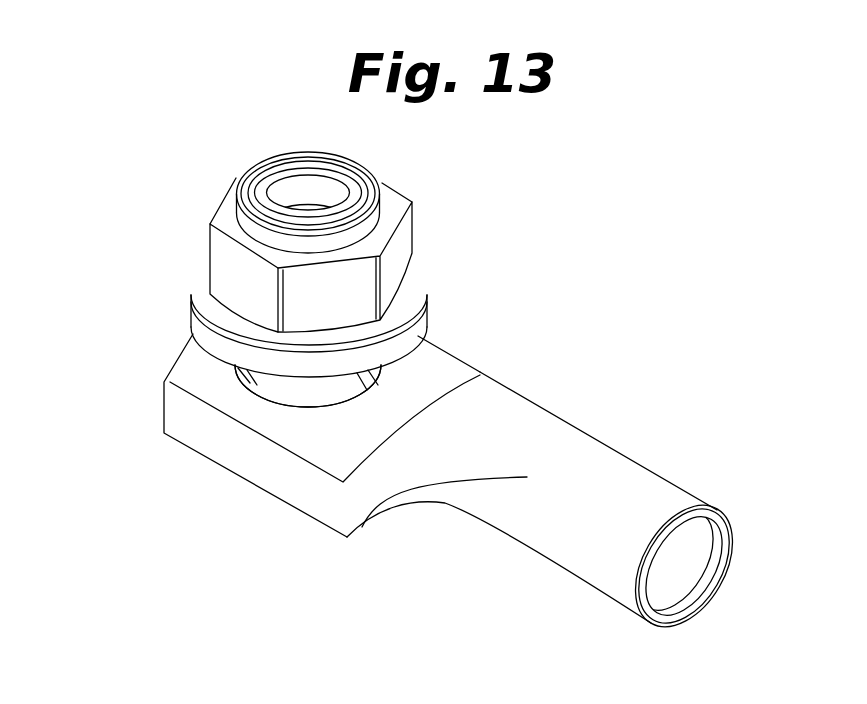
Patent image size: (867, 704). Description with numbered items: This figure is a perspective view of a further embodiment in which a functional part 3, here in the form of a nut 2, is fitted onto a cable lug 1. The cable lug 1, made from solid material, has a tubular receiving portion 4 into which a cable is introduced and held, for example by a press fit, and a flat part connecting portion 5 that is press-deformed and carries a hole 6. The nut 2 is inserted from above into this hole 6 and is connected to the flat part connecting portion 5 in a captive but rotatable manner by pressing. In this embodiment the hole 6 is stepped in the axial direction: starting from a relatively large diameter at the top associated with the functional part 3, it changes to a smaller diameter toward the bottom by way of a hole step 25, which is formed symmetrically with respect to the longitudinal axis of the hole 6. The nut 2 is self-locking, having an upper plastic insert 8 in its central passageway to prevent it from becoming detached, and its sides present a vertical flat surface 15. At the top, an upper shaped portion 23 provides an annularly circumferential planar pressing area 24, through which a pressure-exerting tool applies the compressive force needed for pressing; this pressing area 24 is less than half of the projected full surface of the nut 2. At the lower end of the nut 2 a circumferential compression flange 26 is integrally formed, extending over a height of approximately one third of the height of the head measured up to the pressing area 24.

The cable lug 1 is at (583, 340).
The nut 2 is at (393, 260).
The functional part 3 is at (190, 175).
The tubular receiving portion 4 is at (600, 550).
The flat part connecting portion 5 is at (343, 448).
The hole 6 is at (305, 392).
The upper plastic insert 8 is at (317, 187).
The vertical flat surface 15 is at (247, 288).
The upper shaped portion 23 is at (403, 198).
The pressing area 24 is at (247, 185).
The hole step 25 is at (242, 373).
The compression flange 26 is at (403, 297).